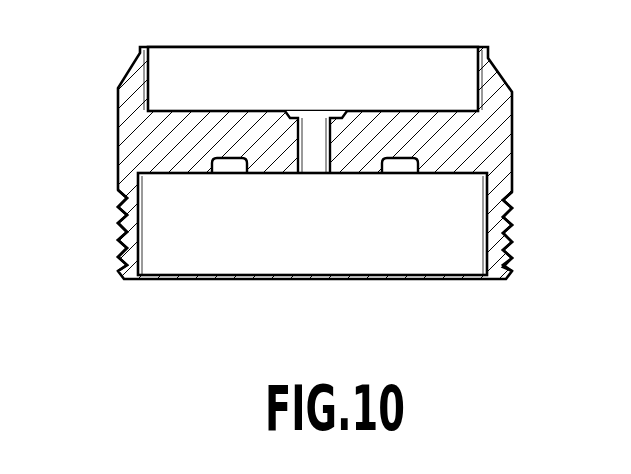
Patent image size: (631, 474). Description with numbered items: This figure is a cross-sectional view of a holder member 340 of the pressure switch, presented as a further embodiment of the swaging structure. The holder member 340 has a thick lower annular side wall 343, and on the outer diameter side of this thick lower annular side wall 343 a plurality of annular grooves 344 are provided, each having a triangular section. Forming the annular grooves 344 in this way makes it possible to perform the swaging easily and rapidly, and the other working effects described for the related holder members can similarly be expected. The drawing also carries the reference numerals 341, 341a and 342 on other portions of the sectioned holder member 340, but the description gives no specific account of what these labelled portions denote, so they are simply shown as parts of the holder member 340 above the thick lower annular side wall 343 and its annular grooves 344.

The holder member 340 is at (515, 93).
The partition wall 341 is at (202, 130).
The through hole 341a is at (315, 148).
The upper recess 342 is at (134, 87).
The thick lower annular side wall 343 is at (131, 257).
The annular grooves 344 is at (508, 232).